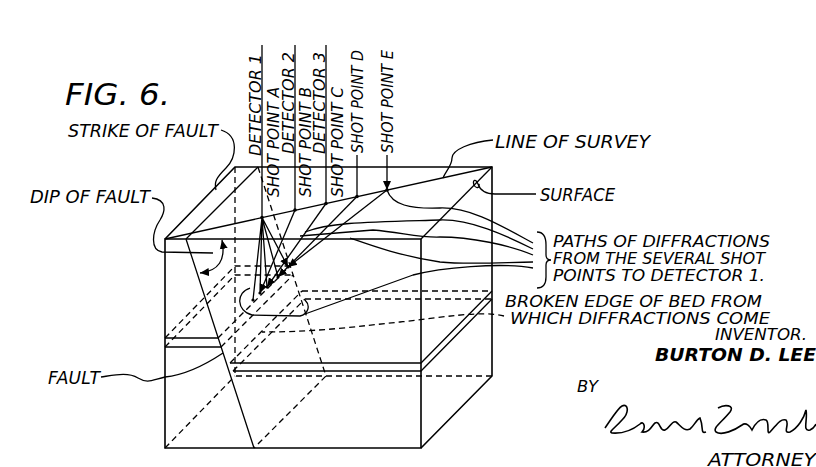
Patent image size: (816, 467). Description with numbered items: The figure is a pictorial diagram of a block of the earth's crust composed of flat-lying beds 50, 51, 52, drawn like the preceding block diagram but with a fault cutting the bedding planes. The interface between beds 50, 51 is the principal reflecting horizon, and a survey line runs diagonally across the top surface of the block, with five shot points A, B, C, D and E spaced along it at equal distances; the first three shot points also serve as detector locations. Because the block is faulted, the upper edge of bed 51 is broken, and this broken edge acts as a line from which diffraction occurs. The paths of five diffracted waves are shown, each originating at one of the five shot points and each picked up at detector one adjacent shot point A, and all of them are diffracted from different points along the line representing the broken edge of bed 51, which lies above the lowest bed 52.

The bed 50 is at (165, 287).
The bed 51 is at (165, 340).
The bed 52 is at (165, 412).